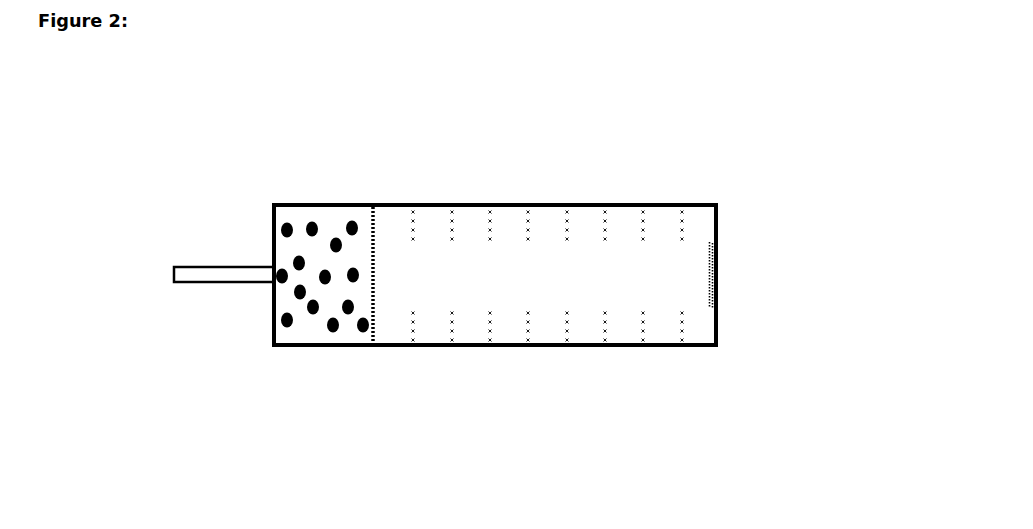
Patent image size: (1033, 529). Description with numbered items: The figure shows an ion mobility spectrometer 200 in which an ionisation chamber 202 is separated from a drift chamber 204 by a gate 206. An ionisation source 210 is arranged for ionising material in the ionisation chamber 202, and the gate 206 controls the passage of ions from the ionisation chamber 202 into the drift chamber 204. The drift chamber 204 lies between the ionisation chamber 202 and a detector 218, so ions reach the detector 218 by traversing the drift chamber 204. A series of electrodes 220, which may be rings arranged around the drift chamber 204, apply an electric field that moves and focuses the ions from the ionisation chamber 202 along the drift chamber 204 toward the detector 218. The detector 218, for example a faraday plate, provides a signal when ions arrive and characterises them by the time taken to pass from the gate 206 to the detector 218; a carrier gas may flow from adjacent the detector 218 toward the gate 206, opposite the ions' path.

The ion mobility spectrometer 200 is at (640, 367).
The ionisation chamber 202 is at (318, 265).
The drift chamber 204 is at (598, 260).
The gate 206 is at (382, 272).
The ionisation source 210 is at (185, 285).
The detector 218 is at (718, 272).
The electrodes 220 is at (493, 222).